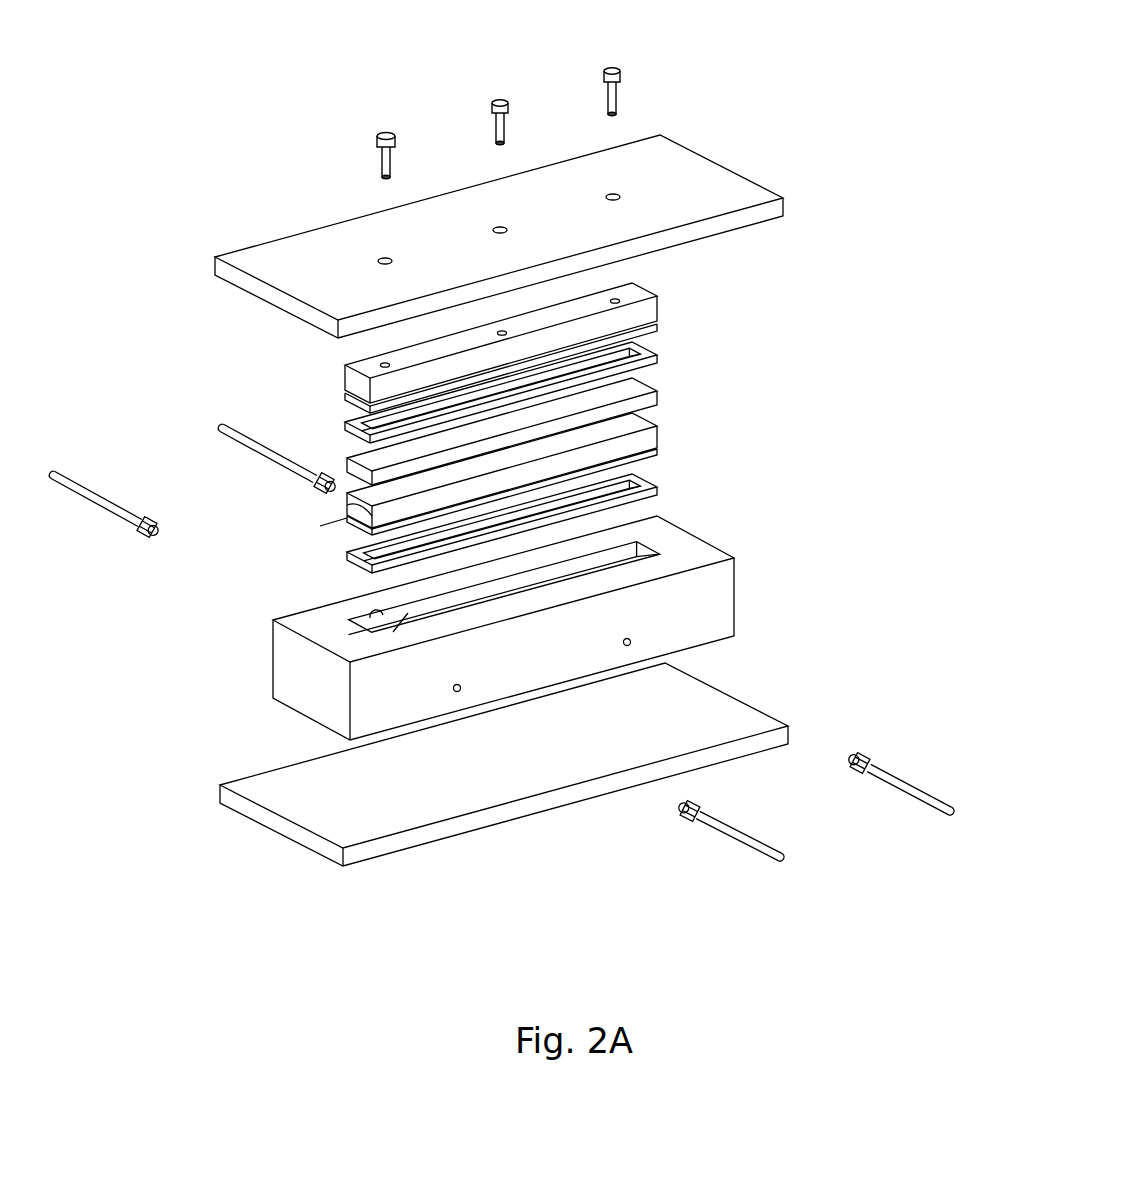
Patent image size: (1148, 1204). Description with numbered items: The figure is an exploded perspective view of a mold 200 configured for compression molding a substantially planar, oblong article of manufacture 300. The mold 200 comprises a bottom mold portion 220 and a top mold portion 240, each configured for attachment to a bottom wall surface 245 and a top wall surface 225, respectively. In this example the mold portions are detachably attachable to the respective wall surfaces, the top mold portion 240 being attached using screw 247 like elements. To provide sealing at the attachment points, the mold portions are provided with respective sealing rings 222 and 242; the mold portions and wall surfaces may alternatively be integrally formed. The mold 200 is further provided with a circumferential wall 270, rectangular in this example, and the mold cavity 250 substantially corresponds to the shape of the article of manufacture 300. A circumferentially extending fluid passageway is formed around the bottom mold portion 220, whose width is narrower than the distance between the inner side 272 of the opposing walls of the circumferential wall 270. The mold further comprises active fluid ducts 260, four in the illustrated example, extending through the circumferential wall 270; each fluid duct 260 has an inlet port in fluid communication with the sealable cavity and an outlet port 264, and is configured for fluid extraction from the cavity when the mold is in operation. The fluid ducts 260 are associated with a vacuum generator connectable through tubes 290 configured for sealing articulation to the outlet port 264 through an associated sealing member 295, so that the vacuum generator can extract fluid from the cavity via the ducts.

The mold 200 is at (847, 108).
The top wall surface 225 is at (697, 183).
The screw 247 is at (500, 102).
The top mold portion 240 is at (647, 315).
The sealing ring 242 is at (652, 357).
The article of manufacture 300 is at (657, 397).
The bottom mold portion 220 is at (650, 440).
The sealing ring 222 is at (650, 492).
The mold cavity 250 is at (640, 542).
The circumferential wall 270 is at (707, 585).
The inner side 272 is at (376, 612).
The fluid duct 260 is at (632, 640).
The outlet port 264 is at (461, 688).
The bottom wall surface 245 is at (437, 848).
The tube 290 is at (113, 510).
The sealing member 295 is at (148, 517).